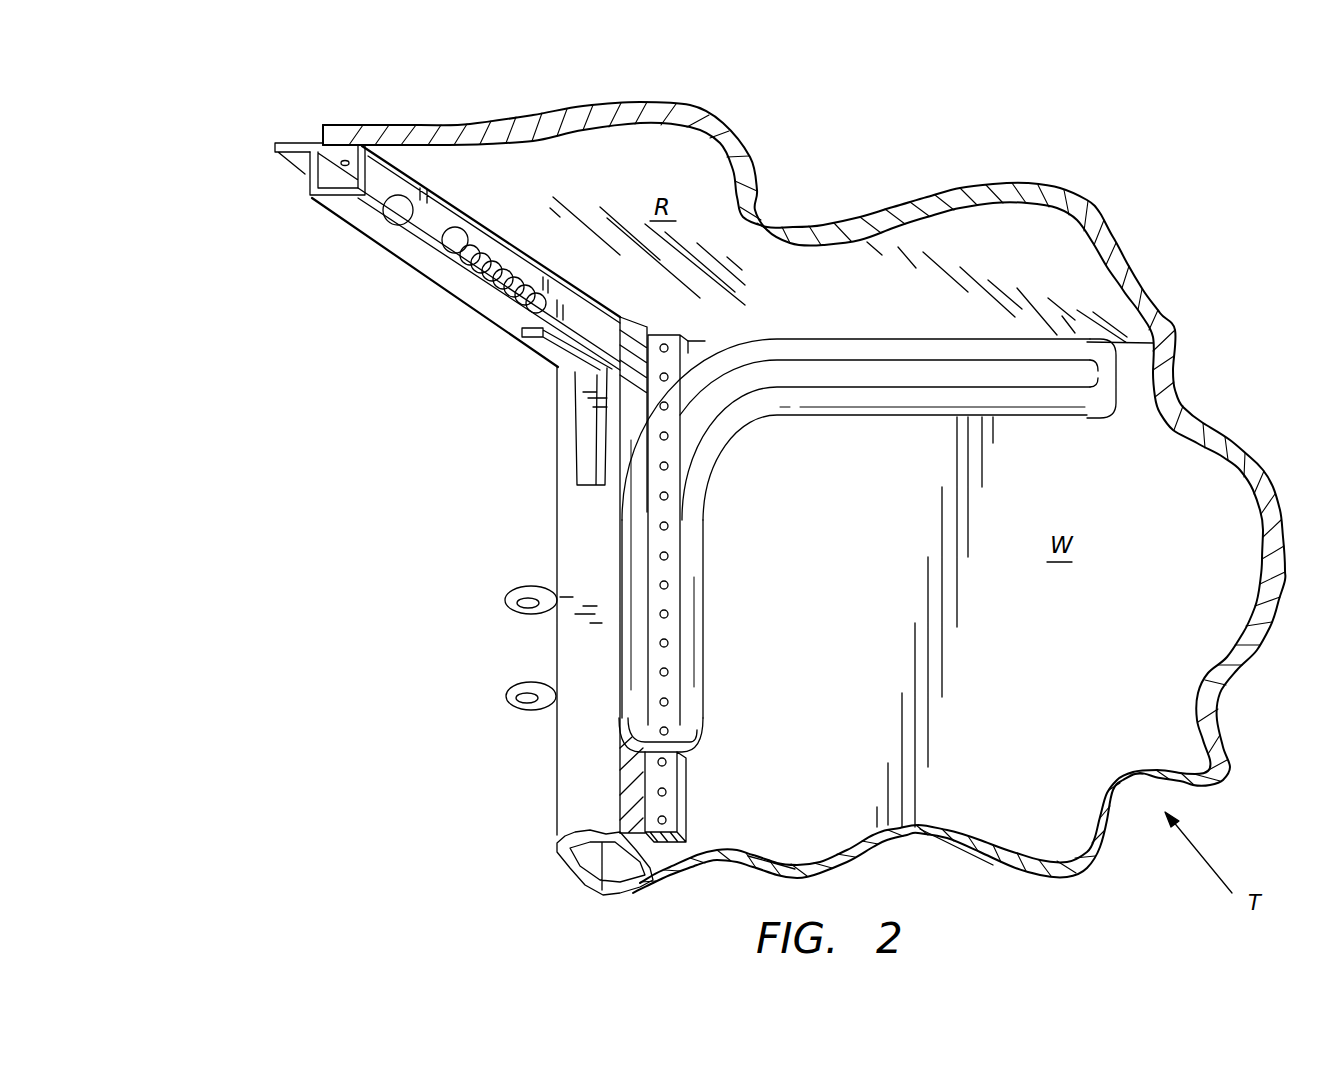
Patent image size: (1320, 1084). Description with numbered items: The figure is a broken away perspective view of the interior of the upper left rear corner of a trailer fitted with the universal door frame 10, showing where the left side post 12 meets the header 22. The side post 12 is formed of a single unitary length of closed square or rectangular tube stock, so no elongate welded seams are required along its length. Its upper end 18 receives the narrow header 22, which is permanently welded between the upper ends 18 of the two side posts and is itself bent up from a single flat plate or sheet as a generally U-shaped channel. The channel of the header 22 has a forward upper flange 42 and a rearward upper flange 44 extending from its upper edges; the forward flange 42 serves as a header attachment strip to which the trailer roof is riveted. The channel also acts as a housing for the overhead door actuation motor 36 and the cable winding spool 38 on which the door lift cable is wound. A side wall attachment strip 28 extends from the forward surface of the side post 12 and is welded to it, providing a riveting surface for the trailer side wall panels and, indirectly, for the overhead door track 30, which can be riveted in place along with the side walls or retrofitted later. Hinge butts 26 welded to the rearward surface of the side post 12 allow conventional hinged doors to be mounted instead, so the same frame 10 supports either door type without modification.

The universal door frame 10 is at (510, 474).
The left side post 12 is at (557, 807).
The upper end 18 is at (572, 390).
The header 22 is at (318, 230).
The hinge butts 26 is at (508, 693).
The side wall attachment strip 28 is at (687, 348).
The overhead door track 30 is at (697, 537).
The overhead door actuation motor 36 is at (417, 252).
The cable winding spool 38 is at (522, 300).
The forward upper flange 42 is at (316, 148).
The rearward upper flange 44 is at (283, 160).